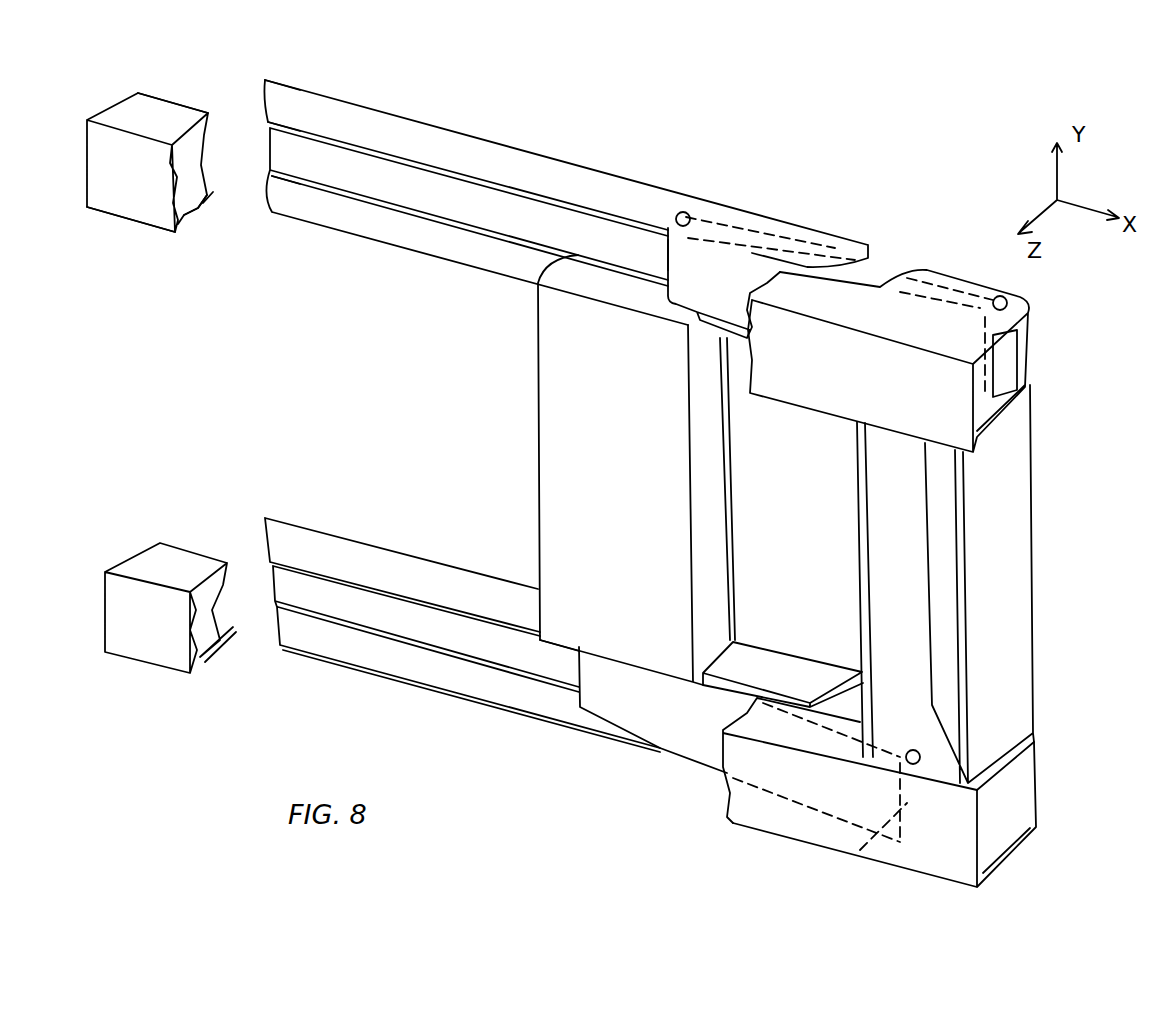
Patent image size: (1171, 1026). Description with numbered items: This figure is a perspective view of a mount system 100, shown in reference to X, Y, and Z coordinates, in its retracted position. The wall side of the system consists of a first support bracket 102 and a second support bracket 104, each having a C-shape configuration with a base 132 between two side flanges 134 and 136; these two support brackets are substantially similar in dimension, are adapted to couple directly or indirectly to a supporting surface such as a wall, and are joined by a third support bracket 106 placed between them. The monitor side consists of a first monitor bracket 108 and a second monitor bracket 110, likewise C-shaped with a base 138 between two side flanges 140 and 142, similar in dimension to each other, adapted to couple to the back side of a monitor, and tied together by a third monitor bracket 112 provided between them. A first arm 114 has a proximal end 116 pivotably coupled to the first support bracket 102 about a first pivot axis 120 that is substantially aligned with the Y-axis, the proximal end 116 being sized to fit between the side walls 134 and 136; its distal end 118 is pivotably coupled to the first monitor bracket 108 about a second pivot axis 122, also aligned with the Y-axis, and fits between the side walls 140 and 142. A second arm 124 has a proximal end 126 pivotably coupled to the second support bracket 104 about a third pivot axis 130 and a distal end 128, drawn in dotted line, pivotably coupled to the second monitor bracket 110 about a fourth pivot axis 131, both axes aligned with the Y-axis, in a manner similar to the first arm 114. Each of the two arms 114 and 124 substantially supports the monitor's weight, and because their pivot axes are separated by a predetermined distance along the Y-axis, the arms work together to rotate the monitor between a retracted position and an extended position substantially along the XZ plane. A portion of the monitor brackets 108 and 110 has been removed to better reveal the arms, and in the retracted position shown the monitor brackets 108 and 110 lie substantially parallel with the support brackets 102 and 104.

The mount system 100 is at (913, 176).
The first support bracket 102 is at (430, 138).
The second support bracket 104 is at (362, 558).
The third support bracket 106 is at (573, 393).
The first monitor bracket 108 is at (616, 245).
The second monitor bracket 110 is at (162, 565).
The third monitor bracket 112 is at (1015, 577).
The first arm 114 is at (726, 278).
The proximal end 116 is at (673, 253).
The distal end 118 is at (1017, 353).
The first pivot axis 120 is at (690, 216).
The second pivot axis 122 is at (1013, 290).
The second arm 124 is at (685, 730).
The proximal end 126 is at (588, 692).
The distal end 128 is at (843, 857).
The third pivot axis 130 is at (598, 770).
The fourth pivot axis 131 is at (900, 760).
The base 132 is at (273, 150).
The side flange 134 is at (286, 95).
The side flange 136 is at (300, 203).
The base 138 is at (133, 190).
The side flange 140 is at (122, 112).
The side flange 142 is at (200, 203).